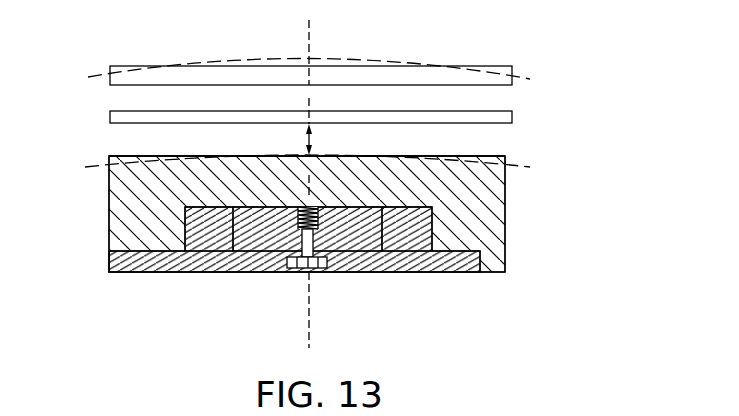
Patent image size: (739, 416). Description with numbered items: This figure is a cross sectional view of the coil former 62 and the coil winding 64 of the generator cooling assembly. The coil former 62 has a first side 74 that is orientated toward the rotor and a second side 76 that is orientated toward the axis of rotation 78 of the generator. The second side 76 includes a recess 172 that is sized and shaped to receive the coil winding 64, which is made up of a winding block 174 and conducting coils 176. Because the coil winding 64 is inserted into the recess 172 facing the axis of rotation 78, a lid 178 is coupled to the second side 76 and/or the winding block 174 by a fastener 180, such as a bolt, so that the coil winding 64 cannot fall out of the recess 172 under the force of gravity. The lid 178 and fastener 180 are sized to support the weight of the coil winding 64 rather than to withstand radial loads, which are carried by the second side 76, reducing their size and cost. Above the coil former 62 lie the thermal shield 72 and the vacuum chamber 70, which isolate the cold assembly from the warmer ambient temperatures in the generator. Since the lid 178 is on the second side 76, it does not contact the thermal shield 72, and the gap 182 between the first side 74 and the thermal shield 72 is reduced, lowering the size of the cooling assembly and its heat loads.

The coil former 62 is at (96, 222).
The coil winding 64 is at (181, 203).
The vacuum chamber 70 is at (173, 79).
The thermal shield 72 is at (110, 113).
The first side 74 is at (465, 157).
The second side 76 is at (118, 273).
The axis of rotation 78 is at (312, 328).
The recess 172 is at (185, 237).
The winding block 174 is at (434, 210).
The conducting coils 176 is at (436, 235).
The lid 178 is at (182, 270).
The fastener 180 is at (302, 270).
The gap 182 is at (313, 140).